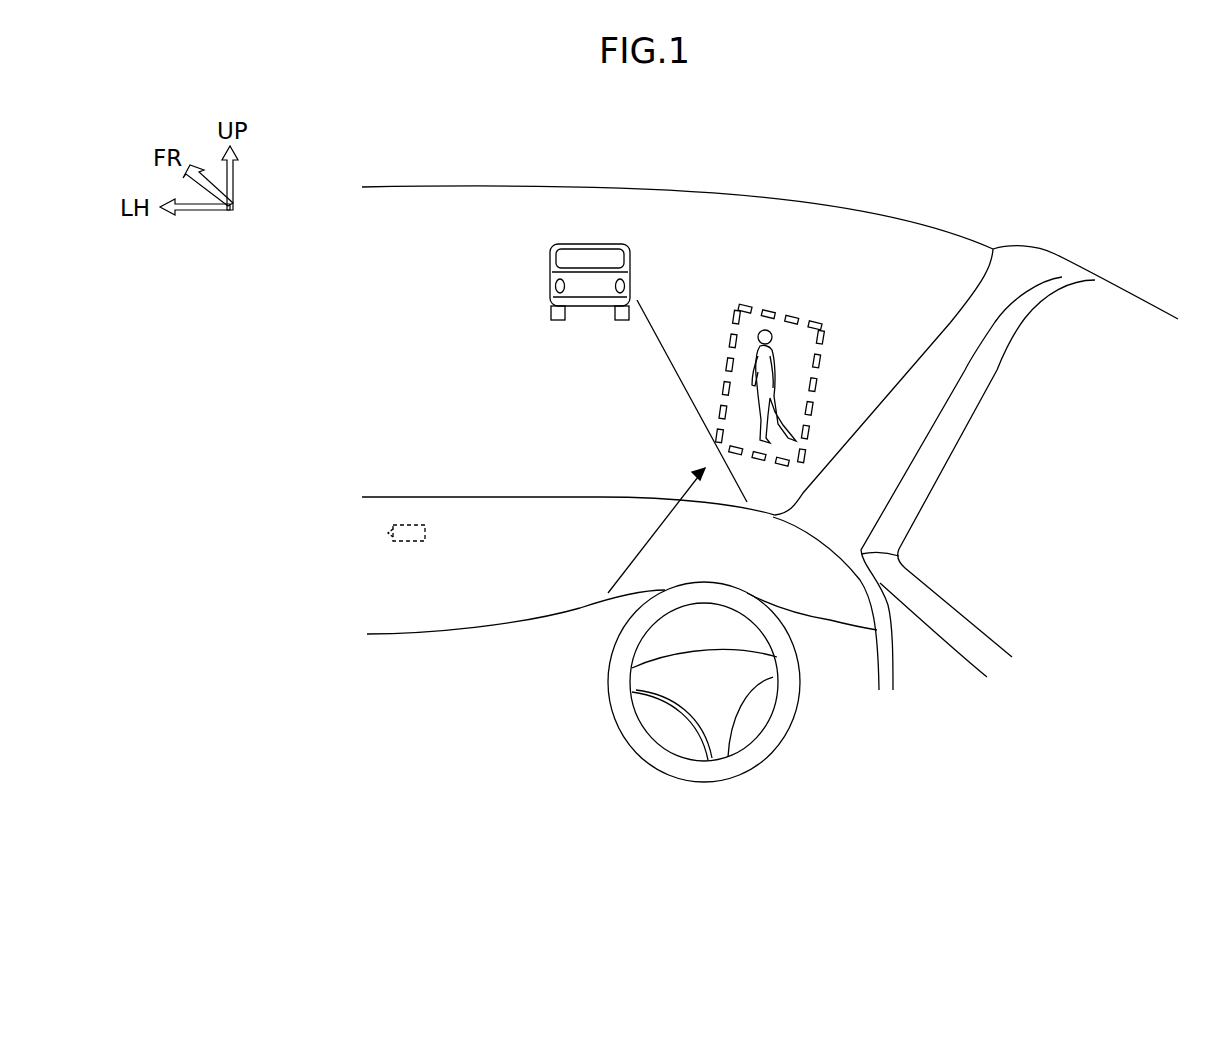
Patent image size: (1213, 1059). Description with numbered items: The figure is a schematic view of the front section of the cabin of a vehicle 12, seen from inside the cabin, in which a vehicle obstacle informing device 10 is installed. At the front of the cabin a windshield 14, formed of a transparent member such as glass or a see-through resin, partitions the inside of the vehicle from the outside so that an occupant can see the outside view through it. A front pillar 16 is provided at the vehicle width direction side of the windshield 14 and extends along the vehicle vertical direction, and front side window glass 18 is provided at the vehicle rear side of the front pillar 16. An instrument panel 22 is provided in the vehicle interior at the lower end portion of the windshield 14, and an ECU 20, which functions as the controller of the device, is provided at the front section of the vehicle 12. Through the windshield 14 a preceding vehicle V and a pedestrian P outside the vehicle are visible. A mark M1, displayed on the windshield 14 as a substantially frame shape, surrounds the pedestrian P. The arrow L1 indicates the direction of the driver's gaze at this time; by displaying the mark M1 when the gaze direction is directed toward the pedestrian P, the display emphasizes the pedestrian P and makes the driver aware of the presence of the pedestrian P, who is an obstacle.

The vehicle obstacle informing device 10 is at (738, 451).
The vehicle 12 is at (982, 203).
The windshield 14 is at (738, 213).
The front pillar 16 is at (950, 338).
The front side window glass 18 is at (1105, 345).
The ECU 20 is at (422, 522).
The instrument panel 22 is at (515, 522).
The preceding vehicle V is at (590, 243).
The pedestrian P is at (778, 340).
The mark M1 is at (728, 335).
The arrow indicating gaze direction L1 is at (640, 525).